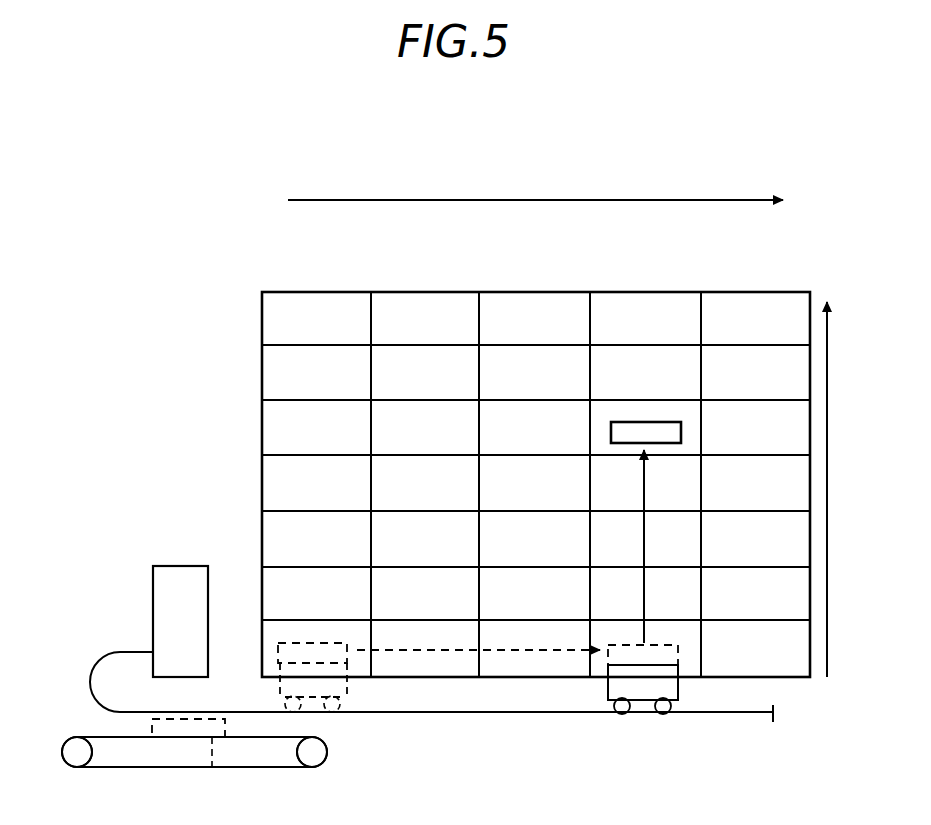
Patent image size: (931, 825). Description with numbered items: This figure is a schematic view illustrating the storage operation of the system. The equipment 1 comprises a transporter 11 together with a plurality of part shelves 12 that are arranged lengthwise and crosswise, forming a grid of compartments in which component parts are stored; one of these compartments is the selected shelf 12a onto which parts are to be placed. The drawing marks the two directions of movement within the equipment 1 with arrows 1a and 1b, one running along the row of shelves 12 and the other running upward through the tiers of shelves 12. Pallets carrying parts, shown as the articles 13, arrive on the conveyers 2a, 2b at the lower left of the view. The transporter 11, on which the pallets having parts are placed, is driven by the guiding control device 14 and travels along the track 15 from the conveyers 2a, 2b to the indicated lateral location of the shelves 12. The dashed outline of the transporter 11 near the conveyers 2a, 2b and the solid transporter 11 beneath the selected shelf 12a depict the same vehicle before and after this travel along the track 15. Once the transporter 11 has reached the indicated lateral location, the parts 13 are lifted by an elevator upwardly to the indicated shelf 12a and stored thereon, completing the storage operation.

The equipment 1 is at (300, 284).
The horizontal transfer direction 1a is at (648, 200).
The vertical transfer direction 1b is at (827, 425).
The part shelves 12 is at (327, 292).
The selected shelf 12a is at (687, 409).
The article container 13 is at (638, 421).
The transporter 11 is at (358, 670).
The guiding control device 14 is at (180, 566).
The track 15 is at (563, 715).
The conveyer 2a is at (336, 748).
The conveyer 2b is at (194, 752).